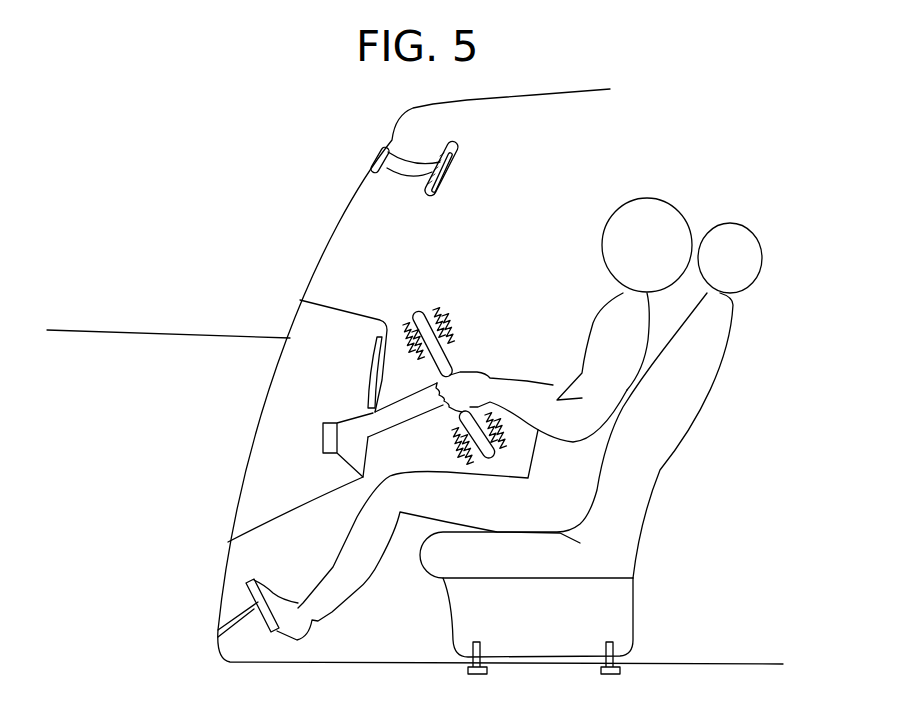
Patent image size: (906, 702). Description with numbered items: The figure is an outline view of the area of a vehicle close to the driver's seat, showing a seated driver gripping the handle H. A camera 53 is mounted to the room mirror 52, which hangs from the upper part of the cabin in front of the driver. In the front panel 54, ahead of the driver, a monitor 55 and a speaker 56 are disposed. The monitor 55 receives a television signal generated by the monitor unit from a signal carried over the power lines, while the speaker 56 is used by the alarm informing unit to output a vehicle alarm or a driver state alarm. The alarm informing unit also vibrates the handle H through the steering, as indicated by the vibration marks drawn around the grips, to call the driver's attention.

The room mirror 52 is at (458, 152).
The camera 53 is at (440, 193).
The front panel 54 is at (350, 318).
The monitor 55 is at (367, 372).
The speaker 56 is at (322, 438).
The handle H is at (420, 310).